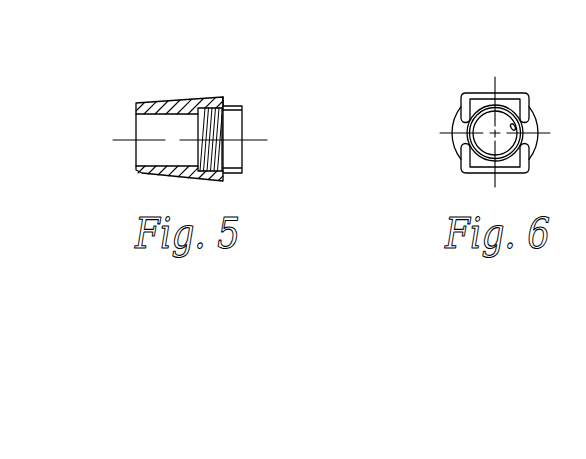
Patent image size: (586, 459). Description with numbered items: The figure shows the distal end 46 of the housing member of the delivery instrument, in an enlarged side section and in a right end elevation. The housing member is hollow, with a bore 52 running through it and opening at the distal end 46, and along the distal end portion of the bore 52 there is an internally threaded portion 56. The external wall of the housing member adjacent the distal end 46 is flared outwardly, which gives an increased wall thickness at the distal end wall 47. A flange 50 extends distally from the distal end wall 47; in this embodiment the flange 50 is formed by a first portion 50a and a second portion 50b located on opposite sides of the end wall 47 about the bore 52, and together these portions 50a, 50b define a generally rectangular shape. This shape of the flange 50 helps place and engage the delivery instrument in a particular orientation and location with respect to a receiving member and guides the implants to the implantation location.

In FIG. 5, the distal end 46 is at (181, 97).
In FIG. 6, the distal end 46 is at (458, 111).
In FIG. 5, the distal end wall 47 is at (224, 100).
In FIG. 5, the flange 50 is at (242, 168).
In FIG. 6, the first portion 50a is at (505, 93).
In FIG. 6, the second portion 50b is at (515, 175).
In FIG. 5, the bore 52 is at (147, 128).
In FIG. 6, the bore 52 is at (482, 137).
In FIG. 5, the internally threaded portion 56 is at (225, 131).
In FIG. 6, the internally threaded portion 56 is at (517, 132).